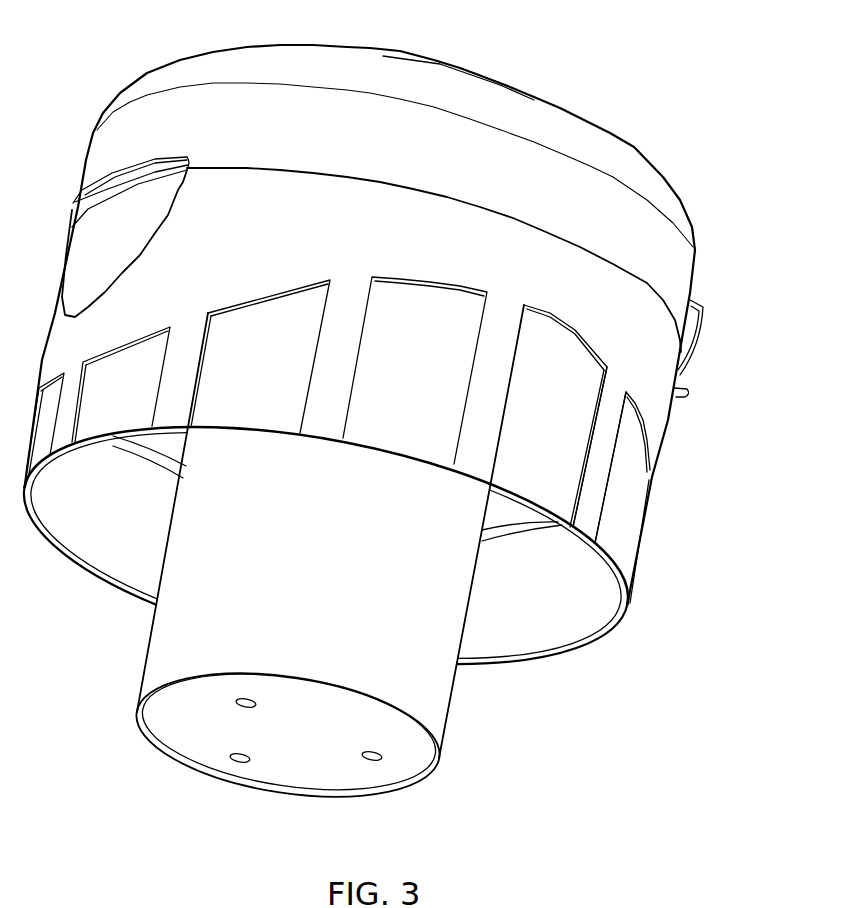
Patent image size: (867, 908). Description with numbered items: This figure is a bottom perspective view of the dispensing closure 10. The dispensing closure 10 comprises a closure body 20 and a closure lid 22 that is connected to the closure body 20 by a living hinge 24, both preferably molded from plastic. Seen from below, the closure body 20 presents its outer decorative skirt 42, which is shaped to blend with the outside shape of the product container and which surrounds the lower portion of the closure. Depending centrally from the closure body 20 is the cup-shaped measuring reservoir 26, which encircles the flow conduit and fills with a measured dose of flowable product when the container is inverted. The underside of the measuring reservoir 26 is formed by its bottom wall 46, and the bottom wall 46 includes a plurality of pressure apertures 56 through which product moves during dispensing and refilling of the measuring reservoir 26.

The dispensing closure 10 is at (637, 146).
The closure body 20 is at (646, 416).
The closure lid 22 is at (240, 75).
The living hinge 24 is at (697, 329).
The measuring reservoir 26 is at (444, 697).
The outer decorative skirt 42 is at (634, 520).
The bottom wall 46 is at (162, 737).
The pressure apertures 56 is at (238, 761).